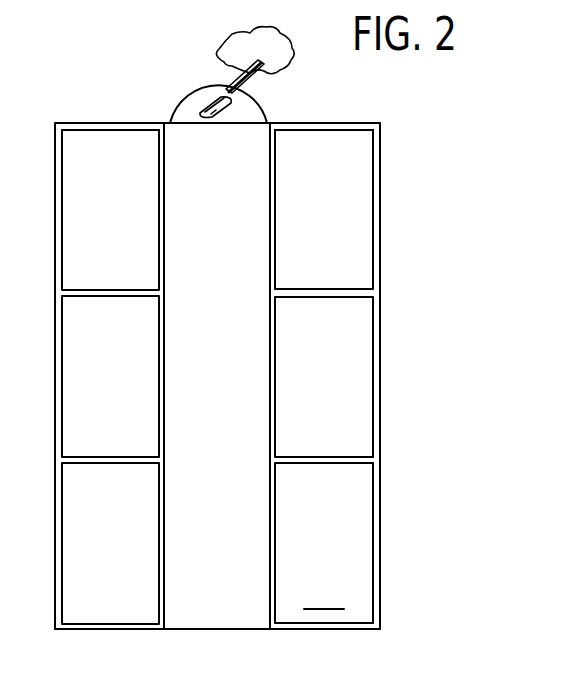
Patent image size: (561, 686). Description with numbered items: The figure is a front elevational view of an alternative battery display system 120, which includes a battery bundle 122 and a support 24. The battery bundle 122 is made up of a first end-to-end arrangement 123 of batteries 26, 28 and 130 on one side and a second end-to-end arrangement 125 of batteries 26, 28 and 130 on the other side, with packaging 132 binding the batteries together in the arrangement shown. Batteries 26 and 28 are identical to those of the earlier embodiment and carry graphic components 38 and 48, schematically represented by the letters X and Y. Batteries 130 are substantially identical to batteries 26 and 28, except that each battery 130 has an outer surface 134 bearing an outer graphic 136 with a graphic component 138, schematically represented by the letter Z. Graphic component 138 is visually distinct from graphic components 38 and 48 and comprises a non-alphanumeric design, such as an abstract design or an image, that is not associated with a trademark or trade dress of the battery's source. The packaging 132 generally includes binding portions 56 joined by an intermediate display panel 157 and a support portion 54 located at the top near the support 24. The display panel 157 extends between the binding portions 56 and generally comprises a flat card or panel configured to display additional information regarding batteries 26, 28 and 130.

The battery display system 120 is at (278, 343).
The battery bundle 122 is at (383, 116).
The first end-to-end arrangement 123 is at (82, 127).
The second end-to-end arrangement 125 is at (338, 126).
The packaging 132 is at (384, 191).
The intermediate display panel 157 is at (218, 631).
The battery 26 is at (77, 180).
The battery 28 is at (78, 348).
The battery 130 is at (78, 510).
The outer graphic 136 is at (357, 538).
The graphic component 38 is at (327, 212).
The graphic component 48 is at (324, 374).
The graphic component 138 is at (322, 534).
The outer surface 134 is at (324, 595).
The binding portions 56 is at (115, 631).
The support portion 54 is at (187, 107).
The support 24 is at (287, 69).